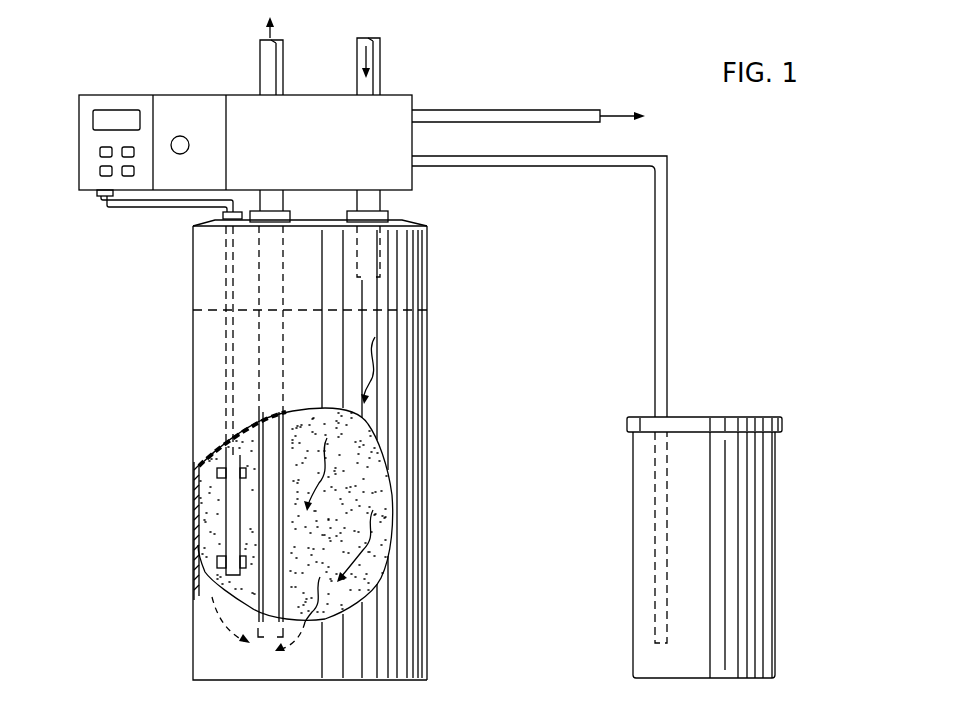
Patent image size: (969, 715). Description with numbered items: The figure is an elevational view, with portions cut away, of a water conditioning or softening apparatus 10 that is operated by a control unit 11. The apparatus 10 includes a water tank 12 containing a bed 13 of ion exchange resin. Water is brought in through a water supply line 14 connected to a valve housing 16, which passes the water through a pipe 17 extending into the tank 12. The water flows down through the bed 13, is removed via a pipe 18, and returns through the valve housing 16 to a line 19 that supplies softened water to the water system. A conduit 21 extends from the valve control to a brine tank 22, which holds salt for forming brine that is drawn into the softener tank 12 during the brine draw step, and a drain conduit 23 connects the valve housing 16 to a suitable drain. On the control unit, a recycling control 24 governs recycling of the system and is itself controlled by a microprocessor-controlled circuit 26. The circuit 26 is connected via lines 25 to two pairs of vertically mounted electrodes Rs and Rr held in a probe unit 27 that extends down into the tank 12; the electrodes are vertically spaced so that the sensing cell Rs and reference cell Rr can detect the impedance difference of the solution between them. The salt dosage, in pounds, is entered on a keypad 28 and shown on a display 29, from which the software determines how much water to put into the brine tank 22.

The water conditioning apparatus 10 is at (435, 364).
The control unit 11 is at (246, 80).
The water tank 12 is at (428, 597).
The bed of ion exchange resin 13 is at (355, 492).
The water supply line 14 is at (359, 57).
The valve housing 16 is at (398, 108).
The pipe 17 is at (378, 202).
The pipe 18 is at (290, 432).
The line 19 is at (283, 72).
The conduit 21 is at (667, 240).
The brine tank 22 is at (773, 503).
The drain conduit 23 is at (569, 109).
The recycling control 24 is at (183, 105).
The lines 25 is at (177, 208).
The microprocessor-controlled circuit 26 is at (79, 179).
The holding probe unit 27 is at (226, 377).
The keypad 28 is at (100, 152).
The display 29 is at (92, 117).
The sensing cell electrodes Rs is at (217, 477).
The reference cell electrodes Rr is at (217, 560).